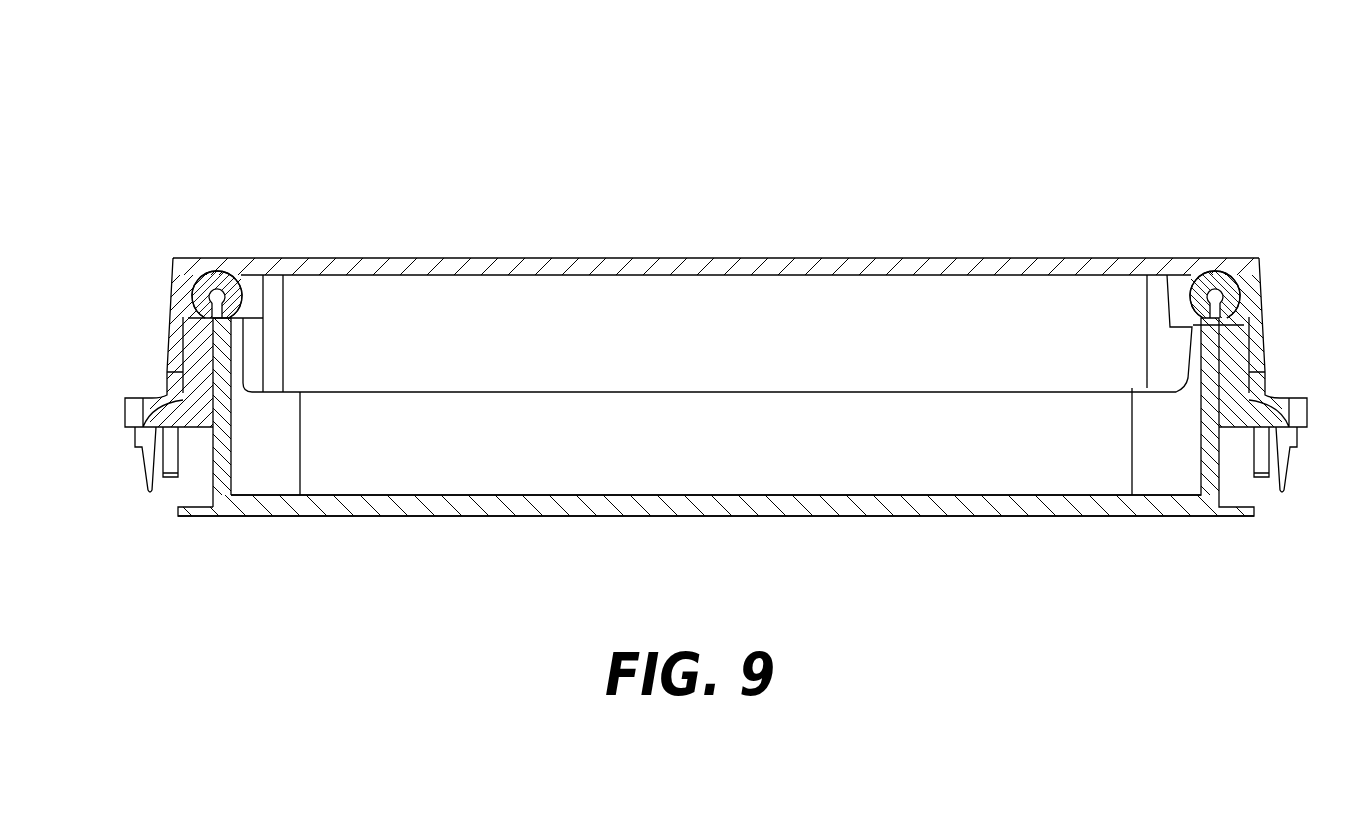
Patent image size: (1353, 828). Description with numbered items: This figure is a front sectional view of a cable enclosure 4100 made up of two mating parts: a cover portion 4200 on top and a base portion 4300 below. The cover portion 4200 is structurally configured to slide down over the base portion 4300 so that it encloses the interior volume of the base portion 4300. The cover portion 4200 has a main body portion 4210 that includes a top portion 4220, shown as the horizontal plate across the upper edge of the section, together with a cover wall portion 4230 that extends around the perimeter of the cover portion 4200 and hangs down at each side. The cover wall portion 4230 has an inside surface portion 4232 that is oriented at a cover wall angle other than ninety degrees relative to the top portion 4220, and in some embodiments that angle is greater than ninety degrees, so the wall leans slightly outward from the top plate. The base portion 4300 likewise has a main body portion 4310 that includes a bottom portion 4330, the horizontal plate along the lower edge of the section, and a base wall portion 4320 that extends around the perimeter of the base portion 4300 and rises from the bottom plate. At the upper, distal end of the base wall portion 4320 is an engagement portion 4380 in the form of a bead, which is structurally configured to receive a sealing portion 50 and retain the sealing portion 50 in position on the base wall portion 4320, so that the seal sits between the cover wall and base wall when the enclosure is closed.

The enclosure 4100 is at (948, 95).
The cover portion 4200 is at (1093, 270).
The main body portion 4210 is at (895, 268).
The top portion 4220 is at (692, 268).
The cover wall portion 4230 is at (178, 313).
The inside surface portion 4232 is at (192, 297).
The sealing portion 50 is at (222, 283).
The engagement portion 4380 is at (218, 297).
The base portion 4300 is at (1167, 503).
The main body portion 4310 is at (393, 498).
The base wall portion 4320 is at (225, 442).
The bottom portion 4330 is at (555, 498).